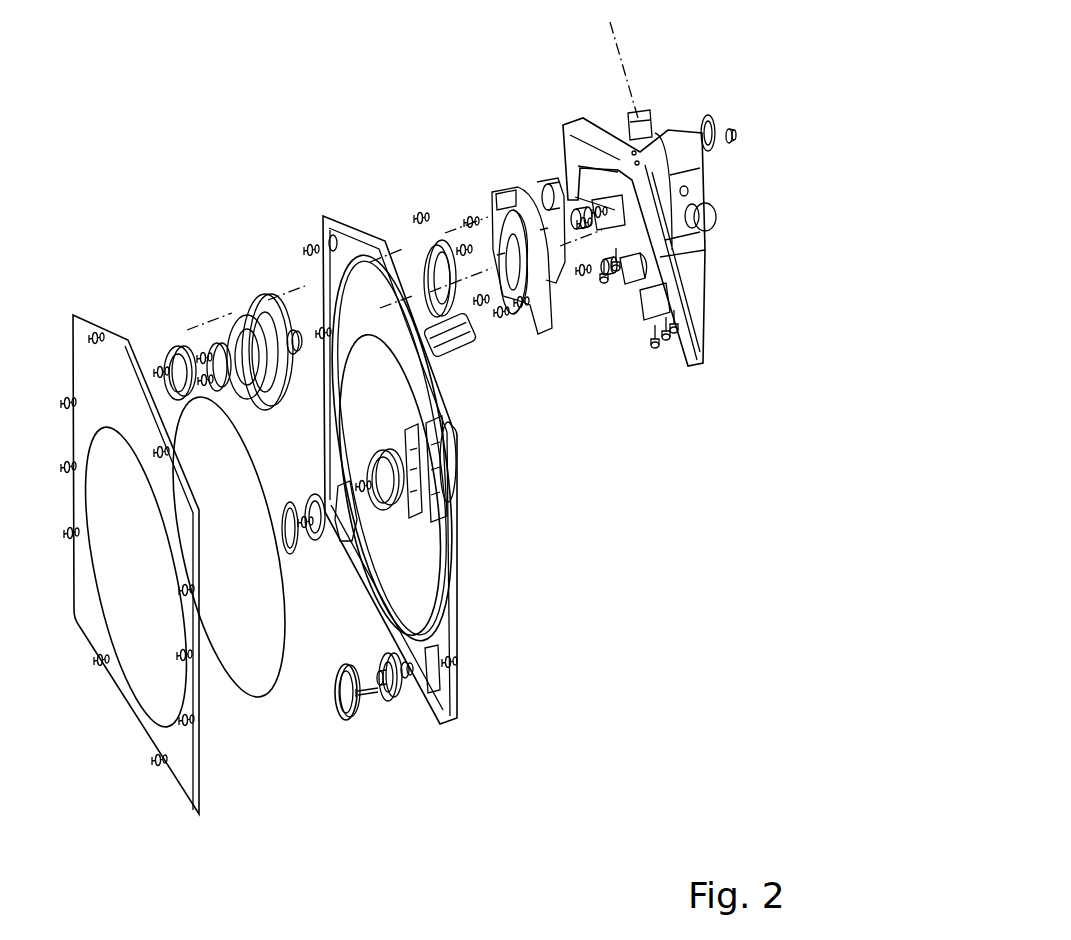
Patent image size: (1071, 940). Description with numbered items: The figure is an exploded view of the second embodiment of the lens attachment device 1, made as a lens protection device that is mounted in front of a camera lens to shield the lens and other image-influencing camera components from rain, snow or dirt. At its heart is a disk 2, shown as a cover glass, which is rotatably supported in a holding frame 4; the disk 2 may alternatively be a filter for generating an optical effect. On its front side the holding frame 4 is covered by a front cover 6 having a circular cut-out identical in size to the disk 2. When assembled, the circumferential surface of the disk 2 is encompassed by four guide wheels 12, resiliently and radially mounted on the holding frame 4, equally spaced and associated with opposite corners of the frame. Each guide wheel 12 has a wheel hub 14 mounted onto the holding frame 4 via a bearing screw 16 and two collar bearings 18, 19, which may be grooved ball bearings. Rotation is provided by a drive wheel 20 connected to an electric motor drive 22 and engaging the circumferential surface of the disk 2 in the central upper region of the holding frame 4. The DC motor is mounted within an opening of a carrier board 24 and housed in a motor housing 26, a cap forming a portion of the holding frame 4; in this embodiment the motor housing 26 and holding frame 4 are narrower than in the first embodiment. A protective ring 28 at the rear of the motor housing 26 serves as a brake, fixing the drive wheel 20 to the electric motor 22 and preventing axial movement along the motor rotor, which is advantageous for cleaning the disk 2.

The lens attachment device 1 is at (332, 152).
The disk 2 is at (249, 465).
The holding frame 4 is at (447, 719).
The front cover 6 is at (194, 818).
The guide wheel 12 is at (361, 721).
The wheel hub 14 is at (390, 702).
The bearing screw 16 is at (345, 706).
The collar bearing 18 is at (403, 677).
The collar bearing 19 is at (380, 674).
The drive wheel 20 is at (229, 312).
The electric motor drive 22 is at (541, 200).
The carrier board 24 is at (489, 193).
The motor housing 26 is at (675, 128).
The protective ring 28 is at (704, 125).